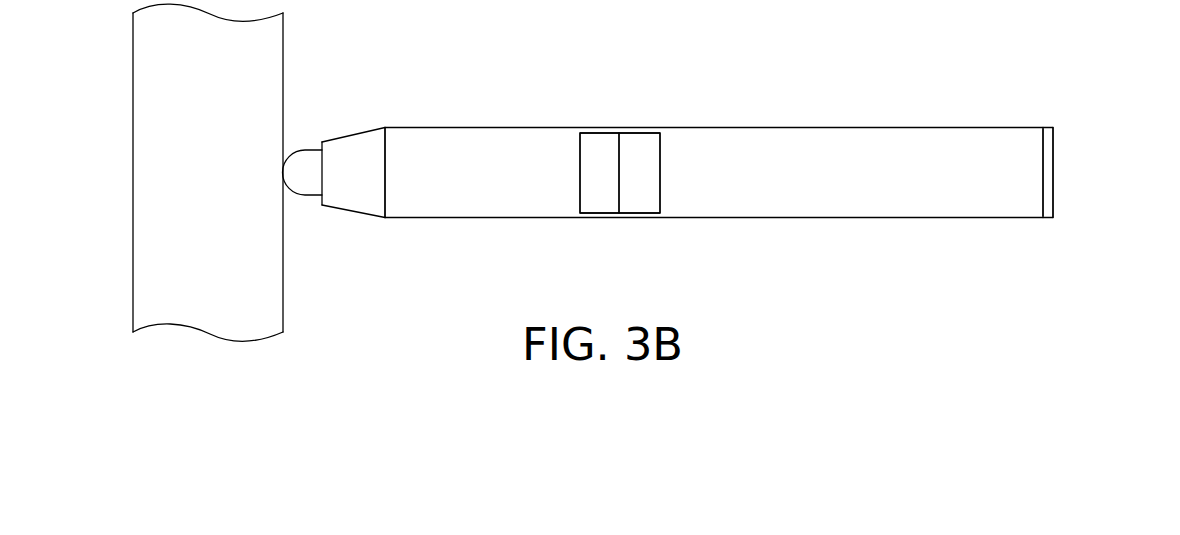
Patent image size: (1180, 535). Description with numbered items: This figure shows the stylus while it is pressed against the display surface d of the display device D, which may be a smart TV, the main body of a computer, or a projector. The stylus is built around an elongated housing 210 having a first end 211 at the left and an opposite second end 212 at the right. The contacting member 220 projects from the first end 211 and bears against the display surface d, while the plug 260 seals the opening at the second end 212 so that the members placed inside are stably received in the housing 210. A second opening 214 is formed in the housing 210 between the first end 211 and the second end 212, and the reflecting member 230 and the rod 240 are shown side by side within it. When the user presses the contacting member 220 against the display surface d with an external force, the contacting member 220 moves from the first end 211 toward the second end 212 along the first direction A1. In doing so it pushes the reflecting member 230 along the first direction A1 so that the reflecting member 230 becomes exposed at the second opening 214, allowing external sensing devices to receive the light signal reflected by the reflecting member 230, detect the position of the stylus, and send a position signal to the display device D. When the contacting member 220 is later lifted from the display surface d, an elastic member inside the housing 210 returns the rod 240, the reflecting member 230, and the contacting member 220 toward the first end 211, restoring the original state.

The display device D is at (150, 173).
The display surface d is at (284, 48).
The contacting member 220 is at (302, 160).
The first end 211 is at (326, 223).
The housing 210 is at (853, 145).
The second end 212 is at (1054, 226).
The plug 260 is at (1055, 172).
The second opening 214 is at (640, 218).
The reflecting member 230 is at (598, 145).
The rod 240 is at (639, 145).
The first direction A1 is at (745, 94).